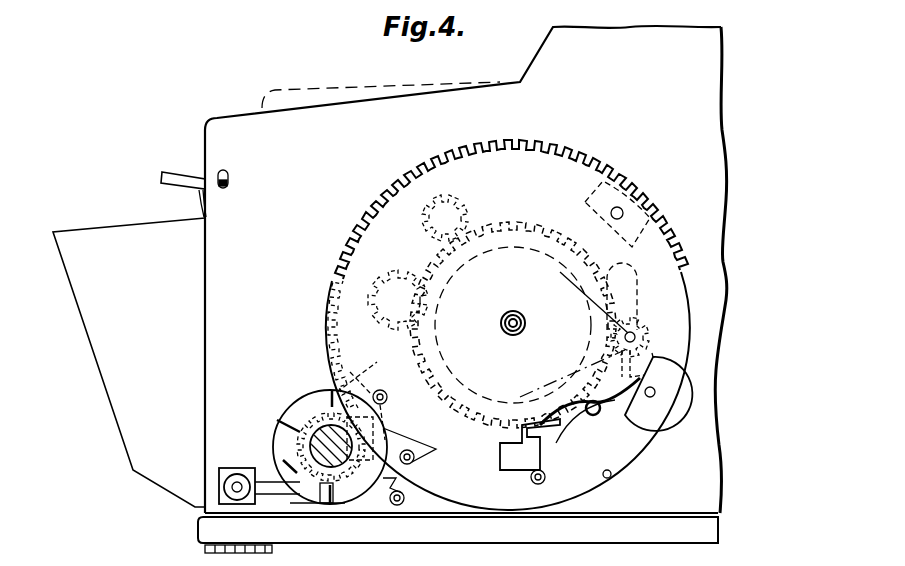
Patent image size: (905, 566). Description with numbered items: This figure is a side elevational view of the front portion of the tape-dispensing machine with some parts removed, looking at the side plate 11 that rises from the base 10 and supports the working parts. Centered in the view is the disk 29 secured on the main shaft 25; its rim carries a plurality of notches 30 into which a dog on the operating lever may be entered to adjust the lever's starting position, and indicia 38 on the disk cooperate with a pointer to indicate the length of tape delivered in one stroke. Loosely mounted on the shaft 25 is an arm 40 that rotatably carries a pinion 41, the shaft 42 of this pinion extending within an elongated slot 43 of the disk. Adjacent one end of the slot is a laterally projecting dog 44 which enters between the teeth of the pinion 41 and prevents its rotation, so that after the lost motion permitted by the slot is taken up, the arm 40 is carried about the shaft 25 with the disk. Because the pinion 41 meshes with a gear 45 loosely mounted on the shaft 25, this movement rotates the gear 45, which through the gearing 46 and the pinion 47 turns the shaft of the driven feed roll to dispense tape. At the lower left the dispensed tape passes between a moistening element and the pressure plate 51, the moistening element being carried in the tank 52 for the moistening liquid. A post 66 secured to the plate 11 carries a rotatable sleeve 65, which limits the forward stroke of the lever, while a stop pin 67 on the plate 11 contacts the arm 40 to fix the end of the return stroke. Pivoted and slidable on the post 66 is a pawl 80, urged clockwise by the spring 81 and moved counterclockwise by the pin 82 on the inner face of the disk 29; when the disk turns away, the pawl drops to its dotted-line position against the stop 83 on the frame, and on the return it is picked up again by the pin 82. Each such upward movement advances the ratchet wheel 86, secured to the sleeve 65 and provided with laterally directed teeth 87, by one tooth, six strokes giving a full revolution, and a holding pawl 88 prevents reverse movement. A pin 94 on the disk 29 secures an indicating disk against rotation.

The base 10 is at (704, 536).
The side plate 11 is at (712, 68).
The shaft 25 is at (525, 318).
The disk 29 is at (471, 143).
The notches 30 is at (558, 145).
The indicia 38 is at (672, 285).
The arm 40 is at (585, 338).
The pinion 41 is at (603, 412).
The shaft of the pinion 42 is at (658, 392).
The elongated slot 43 is at (546, 480).
The dog 44 is at (500, 452).
The gear 45 is at (535, 218).
The gearing 46 is at (330, 270).
The pinion 47 is at (470, 214).
The pressure plate 51 is at (184, 175).
The tank 52 is at (158, 265).
The sleeve 65 is at (318, 428).
The post 66 is at (312, 440).
The stop pin 67 is at (568, 432).
The pawl 80 is at (338, 378).
The spring 81 is at (408, 492).
The pin 82 is at (389, 398).
The stop 83 is at (416, 457).
The ratchet wheel 86 is at (282, 442).
The teeth 87 is at (326, 500).
The holding pawl 88 is at (280, 492).
The pin 94 is at (611, 476).